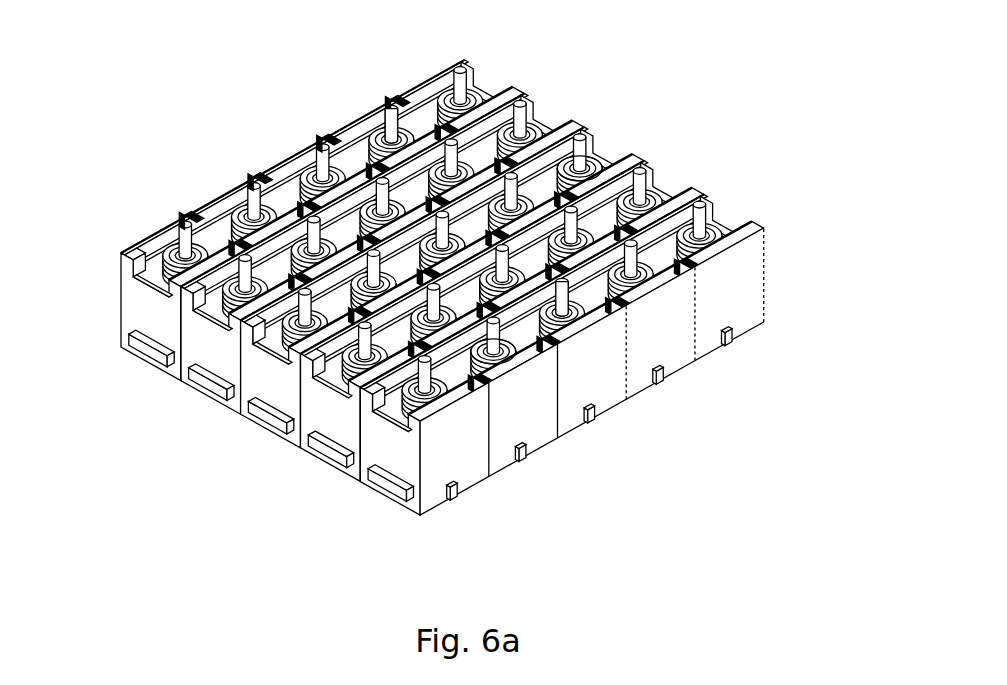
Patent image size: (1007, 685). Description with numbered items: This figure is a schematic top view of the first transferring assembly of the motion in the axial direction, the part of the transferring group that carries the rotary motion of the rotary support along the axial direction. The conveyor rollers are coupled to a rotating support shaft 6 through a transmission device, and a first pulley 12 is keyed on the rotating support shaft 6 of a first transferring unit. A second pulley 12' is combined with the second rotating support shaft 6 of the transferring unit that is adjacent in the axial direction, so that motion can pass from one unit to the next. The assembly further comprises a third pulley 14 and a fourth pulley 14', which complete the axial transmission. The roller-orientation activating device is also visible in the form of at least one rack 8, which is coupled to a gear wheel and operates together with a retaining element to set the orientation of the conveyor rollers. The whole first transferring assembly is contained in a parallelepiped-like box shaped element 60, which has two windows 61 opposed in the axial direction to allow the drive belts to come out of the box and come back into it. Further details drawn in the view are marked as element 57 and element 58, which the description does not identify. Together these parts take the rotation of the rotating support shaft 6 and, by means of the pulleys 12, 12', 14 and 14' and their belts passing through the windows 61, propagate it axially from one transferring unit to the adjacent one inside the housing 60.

The rotating support shaft 6 is at (327, 147).
The rack 8 is at (137, 335).
The first pulley 12 is at (545, 231).
The second pulley 12' is at (252, 423).
The third pulley 14 is at (598, 438).
The fourth pulley 14' is at (696, 372).
The divider wall 57 is at (190, 340).
The cell terminal cap 58 is at (594, 152).
The parallelepiped-like box shaped element 60 is at (753, 247).
The windows 61 is at (152, 236).